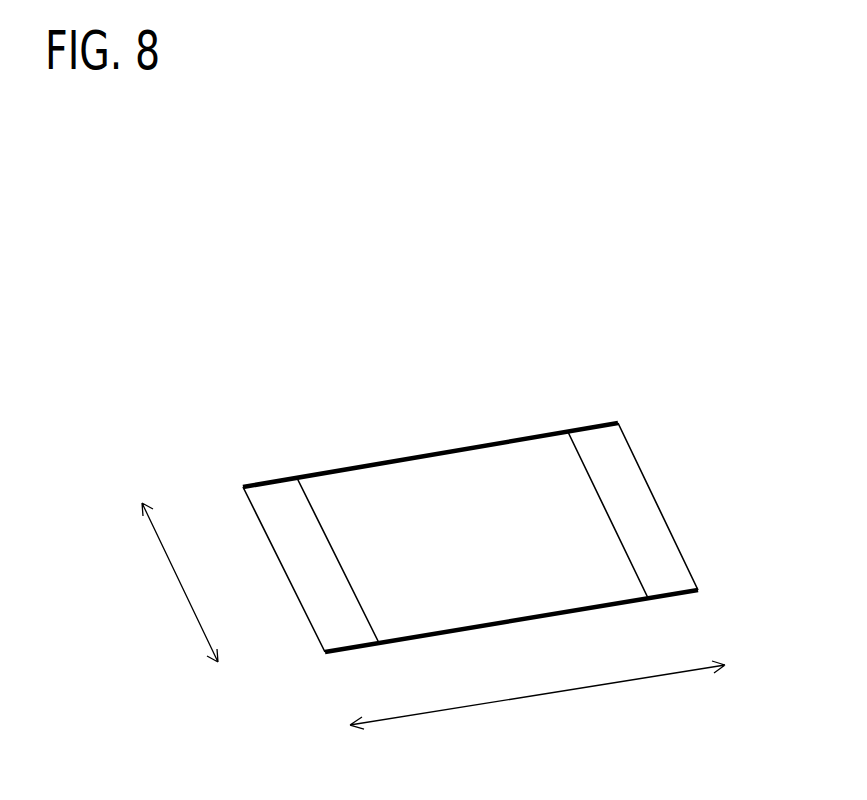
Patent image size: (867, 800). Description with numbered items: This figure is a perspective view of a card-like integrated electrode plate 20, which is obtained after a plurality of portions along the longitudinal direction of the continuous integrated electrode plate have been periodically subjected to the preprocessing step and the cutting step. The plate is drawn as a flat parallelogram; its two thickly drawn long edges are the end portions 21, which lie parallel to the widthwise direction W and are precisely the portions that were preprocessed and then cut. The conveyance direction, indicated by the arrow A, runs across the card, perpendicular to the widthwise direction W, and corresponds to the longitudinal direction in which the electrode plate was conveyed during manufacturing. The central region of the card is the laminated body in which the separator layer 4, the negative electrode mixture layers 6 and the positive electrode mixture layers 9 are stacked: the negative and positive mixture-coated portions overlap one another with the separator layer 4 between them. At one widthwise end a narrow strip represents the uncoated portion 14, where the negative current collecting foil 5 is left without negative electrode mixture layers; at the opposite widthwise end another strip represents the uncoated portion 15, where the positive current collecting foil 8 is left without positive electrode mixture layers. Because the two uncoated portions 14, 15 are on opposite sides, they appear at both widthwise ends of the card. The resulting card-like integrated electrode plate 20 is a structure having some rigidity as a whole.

The integrated electrode plate 20 is at (474, 483).
The end portions 21 is at (510, 440).
The separator layer 4 is at (472, 510).
The negative electrode mixture layers 6 is at (472, 510).
The positive electrode mixture layers 9 is at (400, 487).
The uncoated portion 14 is at (280, 565).
The negative current collecting foil 5 is at (318, 572).
The uncoated portion 15 is at (667, 510).
The positive current collecting foil 8 is at (645, 520).
The conveyance direction A is at (180, 582).
The widthwise direction W is at (537, 696).